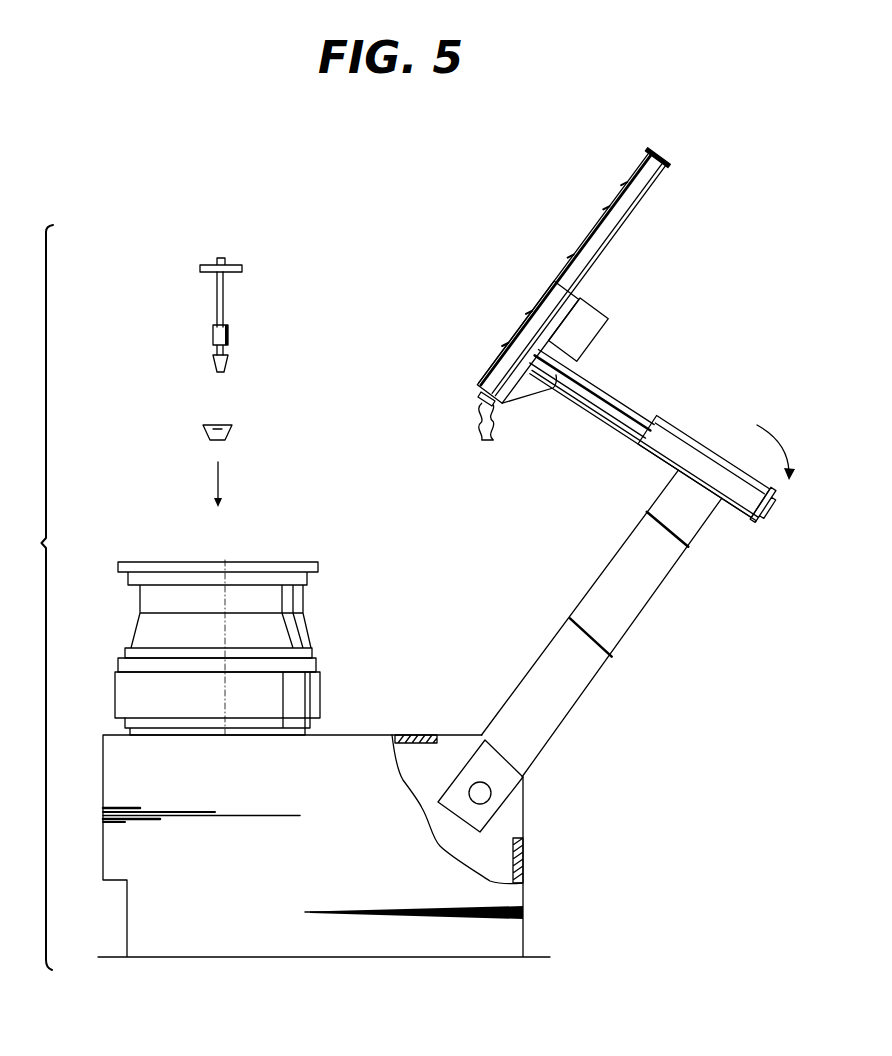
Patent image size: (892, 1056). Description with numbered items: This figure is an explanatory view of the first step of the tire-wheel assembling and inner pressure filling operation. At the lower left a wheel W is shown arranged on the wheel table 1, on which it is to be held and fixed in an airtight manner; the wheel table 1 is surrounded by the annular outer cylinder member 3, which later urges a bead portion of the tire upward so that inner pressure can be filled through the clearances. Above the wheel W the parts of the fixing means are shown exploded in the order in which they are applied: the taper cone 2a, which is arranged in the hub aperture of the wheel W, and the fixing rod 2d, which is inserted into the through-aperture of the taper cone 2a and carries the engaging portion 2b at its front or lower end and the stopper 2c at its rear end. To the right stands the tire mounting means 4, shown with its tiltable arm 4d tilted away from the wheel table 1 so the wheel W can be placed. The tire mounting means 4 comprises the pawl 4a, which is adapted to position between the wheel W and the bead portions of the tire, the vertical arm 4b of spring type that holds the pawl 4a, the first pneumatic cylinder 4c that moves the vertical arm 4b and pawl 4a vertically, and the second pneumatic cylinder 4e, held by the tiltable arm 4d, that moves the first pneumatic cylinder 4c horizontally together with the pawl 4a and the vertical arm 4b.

The wheel W is at (303, 602).
The wheel table 1 is at (212, 696).
The annular outer cylinder member 3 is at (320, 685).
The taper cone 2a is at (232, 433).
The engaging portion 2b is at (228, 363).
The stopper 2c is at (242, 269).
The fixing rod 2d is at (225, 308).
The tire mounting means 4 is at (616, 490).
The pawl 4a is at (493, 440).
The vertical arm 4b is at (603, 220).
The first pneumatic cylinder 4c is at (512, 327).
The tiltable arm 4d is at (630, 616).
The second pneumatic cylinder 4e is at (701, 446).